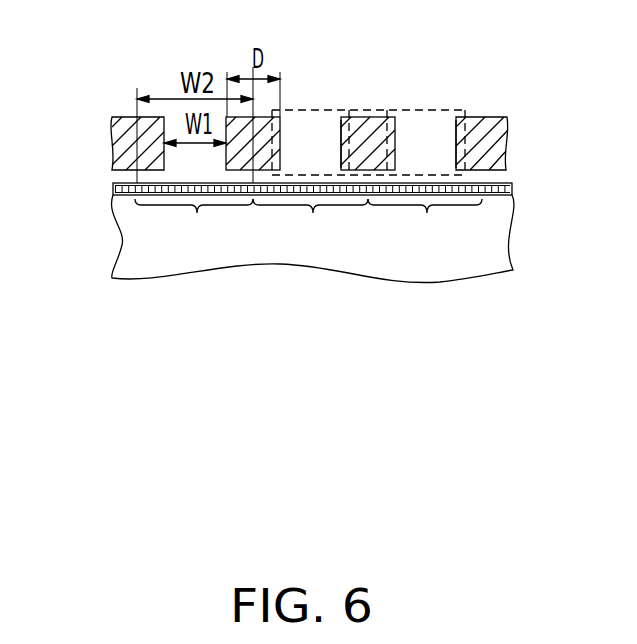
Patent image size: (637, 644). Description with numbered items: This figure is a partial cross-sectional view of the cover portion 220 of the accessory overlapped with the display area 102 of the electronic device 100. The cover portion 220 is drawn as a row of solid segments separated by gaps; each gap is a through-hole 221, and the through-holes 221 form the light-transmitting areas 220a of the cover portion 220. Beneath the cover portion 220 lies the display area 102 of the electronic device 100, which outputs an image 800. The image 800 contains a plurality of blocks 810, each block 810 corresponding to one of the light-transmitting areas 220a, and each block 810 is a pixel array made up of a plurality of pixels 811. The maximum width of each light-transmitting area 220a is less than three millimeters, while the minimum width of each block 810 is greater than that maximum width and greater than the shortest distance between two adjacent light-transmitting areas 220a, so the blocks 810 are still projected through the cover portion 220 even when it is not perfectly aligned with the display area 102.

The electronic device 100 is at (495, 228).
The display area 102 is at (503, 184).
The cover portion 220 is at (505, 131).
The light-transmitting areas 220a is at (323, 108).
The through-holes 221 is at (332, 146).
The image 800 is at (106, 187).
The blocks 810 is at (197, 213).
The pixels 811 is at (138, 194).